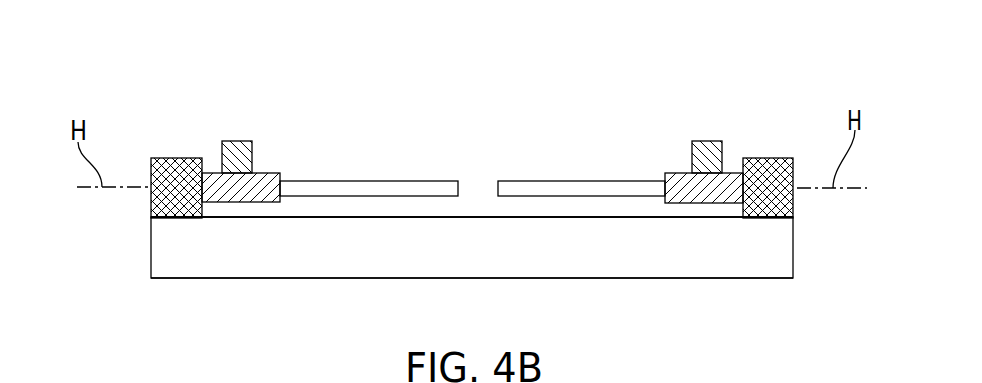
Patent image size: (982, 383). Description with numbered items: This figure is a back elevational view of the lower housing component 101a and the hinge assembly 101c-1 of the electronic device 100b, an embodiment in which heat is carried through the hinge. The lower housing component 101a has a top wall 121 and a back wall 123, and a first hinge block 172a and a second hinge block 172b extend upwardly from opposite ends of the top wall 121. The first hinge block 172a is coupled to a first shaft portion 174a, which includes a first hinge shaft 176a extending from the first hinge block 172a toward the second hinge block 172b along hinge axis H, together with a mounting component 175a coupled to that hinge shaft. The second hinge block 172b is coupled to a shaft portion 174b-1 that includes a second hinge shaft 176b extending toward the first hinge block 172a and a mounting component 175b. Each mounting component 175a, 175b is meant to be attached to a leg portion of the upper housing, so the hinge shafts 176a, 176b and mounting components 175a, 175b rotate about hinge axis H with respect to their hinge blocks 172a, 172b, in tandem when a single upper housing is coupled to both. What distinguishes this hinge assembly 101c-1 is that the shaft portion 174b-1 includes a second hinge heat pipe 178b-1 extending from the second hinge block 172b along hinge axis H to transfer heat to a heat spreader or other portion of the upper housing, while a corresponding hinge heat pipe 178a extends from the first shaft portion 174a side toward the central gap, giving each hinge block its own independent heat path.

The lower housing component 101a is at (453, 193).
The hinge assembly 101c-1 is at (227, 131).
The first hinge block 172a is at (172, 158).
The first shaft portion 174a is at (279, 126).
The mounting component 175a is at (233, 141).
The first hinge shaft 176a is at (280, 173).
The first wiring layer 178a is at (410, 181).
The second hinge heat pipe 178b-1 is at (553, 181).
The second hinge shaft 176b is at (665, 173).
The shaft portion 174b-1 is at (672, 111).
The mounting component 175b is at (710, 141).
The second hinge block 172b is at (758, 158).
The back wall 123 is at (483, 260).
The top wall 121 is at (343, 217).
The substrate 100b is at (715, 318).